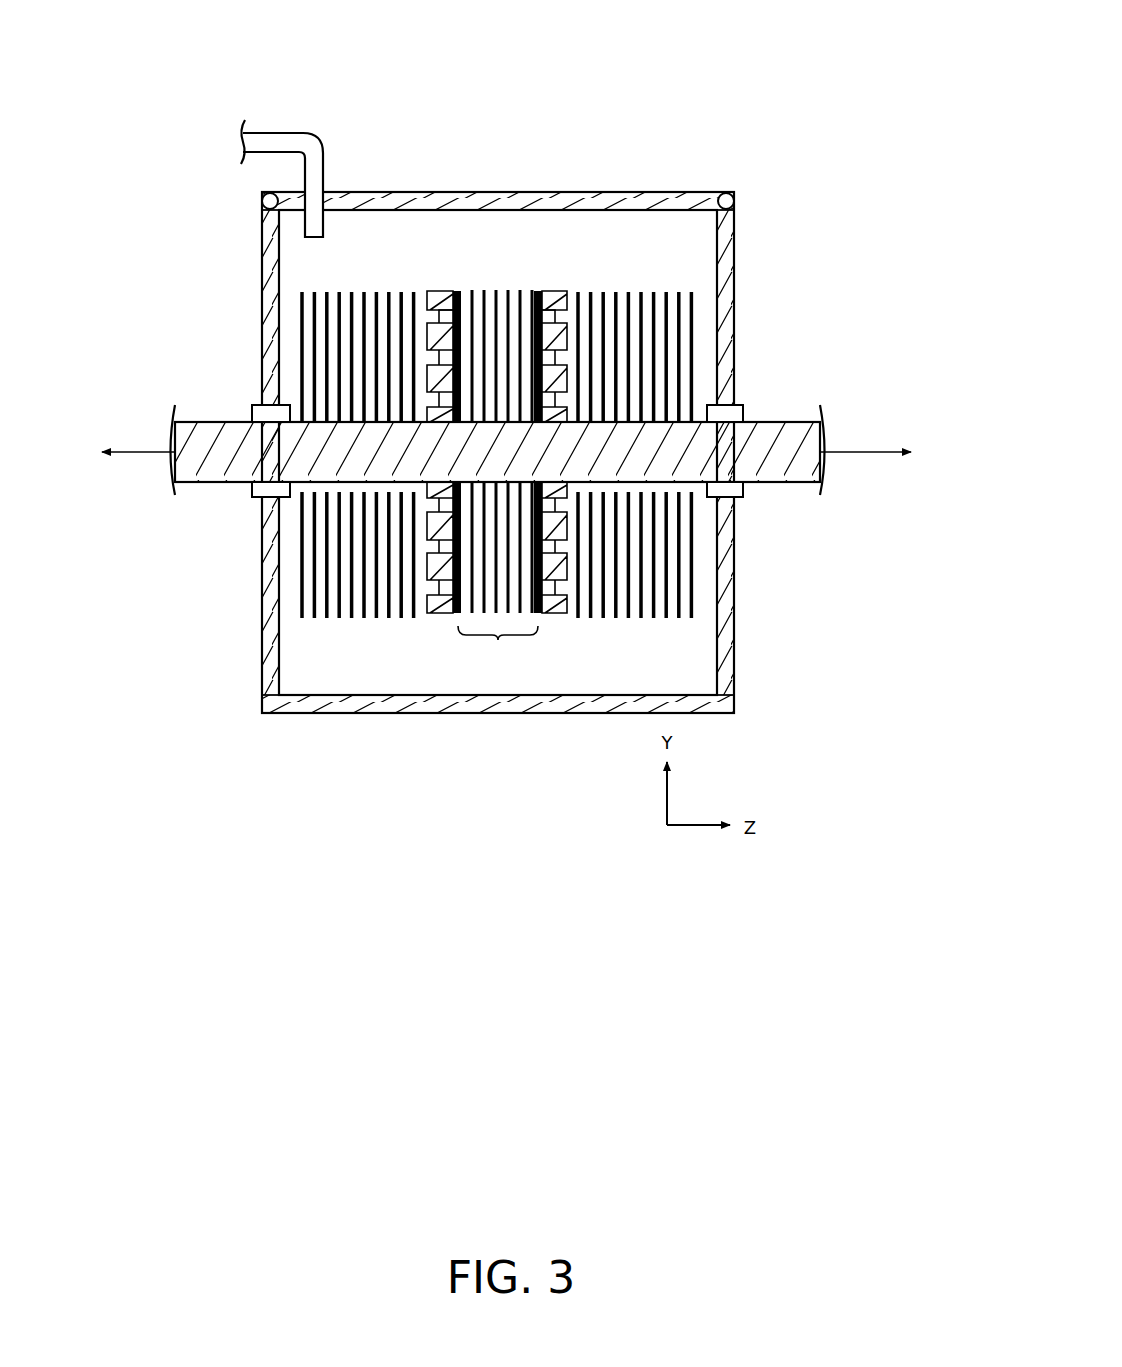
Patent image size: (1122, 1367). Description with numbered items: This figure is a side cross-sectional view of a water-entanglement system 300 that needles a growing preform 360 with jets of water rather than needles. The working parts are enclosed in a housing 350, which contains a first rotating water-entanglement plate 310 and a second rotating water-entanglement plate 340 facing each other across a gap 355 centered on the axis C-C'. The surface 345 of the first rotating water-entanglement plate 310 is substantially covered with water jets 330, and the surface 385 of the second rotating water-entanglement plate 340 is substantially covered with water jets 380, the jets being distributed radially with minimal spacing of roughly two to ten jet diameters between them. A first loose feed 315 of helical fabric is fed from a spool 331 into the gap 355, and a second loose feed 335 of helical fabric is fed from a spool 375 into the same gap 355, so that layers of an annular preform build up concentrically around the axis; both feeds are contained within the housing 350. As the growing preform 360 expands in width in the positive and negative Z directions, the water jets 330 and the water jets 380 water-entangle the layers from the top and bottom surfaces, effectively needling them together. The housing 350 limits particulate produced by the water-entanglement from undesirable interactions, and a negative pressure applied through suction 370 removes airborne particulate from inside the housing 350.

The system 300 is at (504, 360).
The first rotating water-entanglement plate 310 is at (571, 456).
The first loose feed of helical fabric 315 is at (638, 290).
The water jets 330 is at (541, 308).
The spool 331 is at (657, 440).
The second loose feed of helical fabric 335 is at (363, 292).
The second rotating water-entanglement plate 340 is at (452, 456).
The surface 345 is at (546, 315).
The housing 350 is at (595, 200).
The gap 355 is at (498, 649).
The growing preform 360 is at (493, 292).
The suction 370 is at (318, 137).
The spool 375 is at (477, 451).
The water jets 380 is at (433, 305).
The surface 385 is at (447, 340).